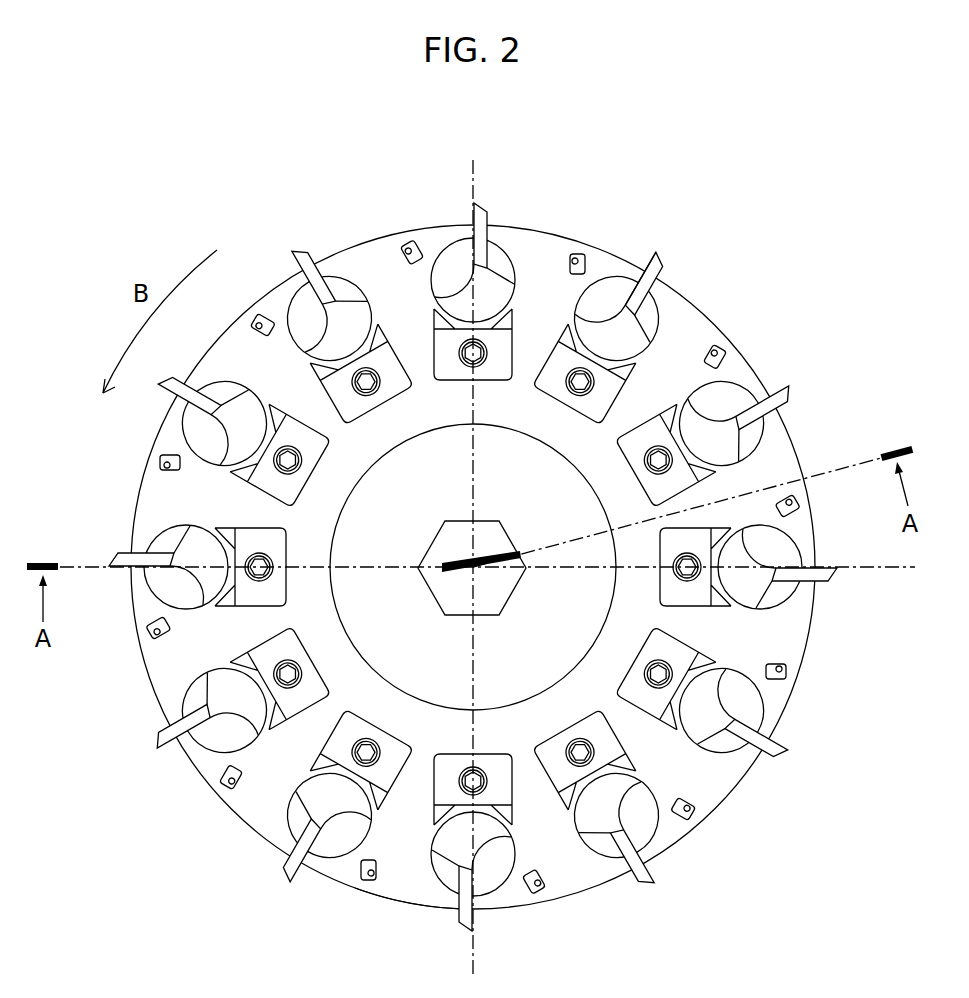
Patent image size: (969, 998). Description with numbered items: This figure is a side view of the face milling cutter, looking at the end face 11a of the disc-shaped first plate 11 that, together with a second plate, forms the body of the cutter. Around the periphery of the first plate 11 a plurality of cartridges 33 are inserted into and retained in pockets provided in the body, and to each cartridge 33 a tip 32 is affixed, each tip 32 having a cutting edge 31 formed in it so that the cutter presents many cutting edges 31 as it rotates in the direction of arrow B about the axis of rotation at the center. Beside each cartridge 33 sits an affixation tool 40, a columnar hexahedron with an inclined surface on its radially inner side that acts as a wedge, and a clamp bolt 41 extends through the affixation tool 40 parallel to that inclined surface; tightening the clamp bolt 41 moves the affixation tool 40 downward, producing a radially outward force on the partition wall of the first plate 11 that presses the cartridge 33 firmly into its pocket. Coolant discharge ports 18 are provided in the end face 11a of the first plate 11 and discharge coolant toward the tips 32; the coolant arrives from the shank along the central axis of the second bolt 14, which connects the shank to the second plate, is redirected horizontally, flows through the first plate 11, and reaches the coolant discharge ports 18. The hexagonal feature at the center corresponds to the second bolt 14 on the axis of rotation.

The first plate 11 is at (240, 822).
The end face of the first plate 11a is at (400, 880).
The second bolt 14 is at (562, 680).
The coolant discharge port 18 is at (727, 358).
The cutting edge 31 is at (658, 256).
The tip 32 is at (643, 260).
The cartridge 33 is at (617, 277).
The affixation tool 40 is at (600, 395).
The clamp bolt 41 is at (570, 368).